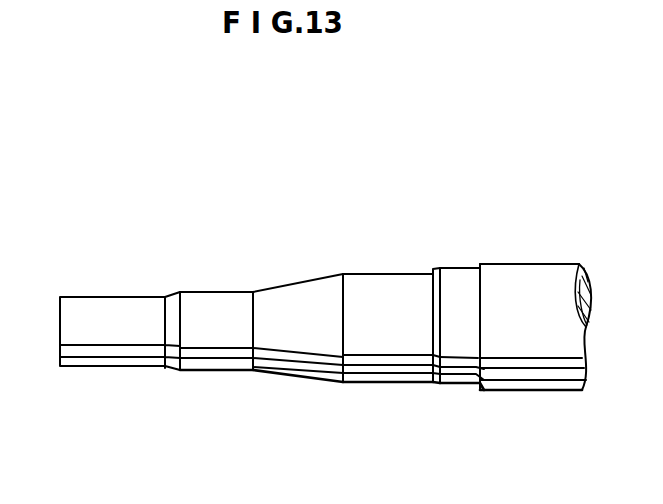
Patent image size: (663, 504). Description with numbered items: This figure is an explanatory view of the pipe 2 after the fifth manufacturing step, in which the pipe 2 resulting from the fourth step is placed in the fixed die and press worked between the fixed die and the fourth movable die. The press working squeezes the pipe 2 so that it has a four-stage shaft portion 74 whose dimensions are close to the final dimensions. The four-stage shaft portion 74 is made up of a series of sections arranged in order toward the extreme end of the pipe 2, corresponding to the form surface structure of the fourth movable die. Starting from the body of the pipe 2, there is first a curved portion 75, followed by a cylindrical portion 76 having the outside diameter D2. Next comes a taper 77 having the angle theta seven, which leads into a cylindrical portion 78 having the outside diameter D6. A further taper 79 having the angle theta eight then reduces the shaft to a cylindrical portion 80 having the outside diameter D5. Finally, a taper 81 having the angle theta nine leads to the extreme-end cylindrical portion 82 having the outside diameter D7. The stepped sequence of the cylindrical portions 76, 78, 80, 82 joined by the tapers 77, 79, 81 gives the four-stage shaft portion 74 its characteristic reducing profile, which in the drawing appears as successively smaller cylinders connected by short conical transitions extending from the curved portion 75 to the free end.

The four-stage shaft portion 74 is at (490, 176).
The cylindrical portion 82 is at (103, 310).
The taper 81 is at (170, 364).
The cylindrical portion 80 is at (222, 372).
The taper 79 is at (297, 376).
The cylindrical portion 78 is at (393, 345).
The taper 77 is at (434, 272).
The curved portion 75 is at (474, 266).
The cylindrical portion 76 is at (457, 352).
The pipe 2 is at (539, 272).